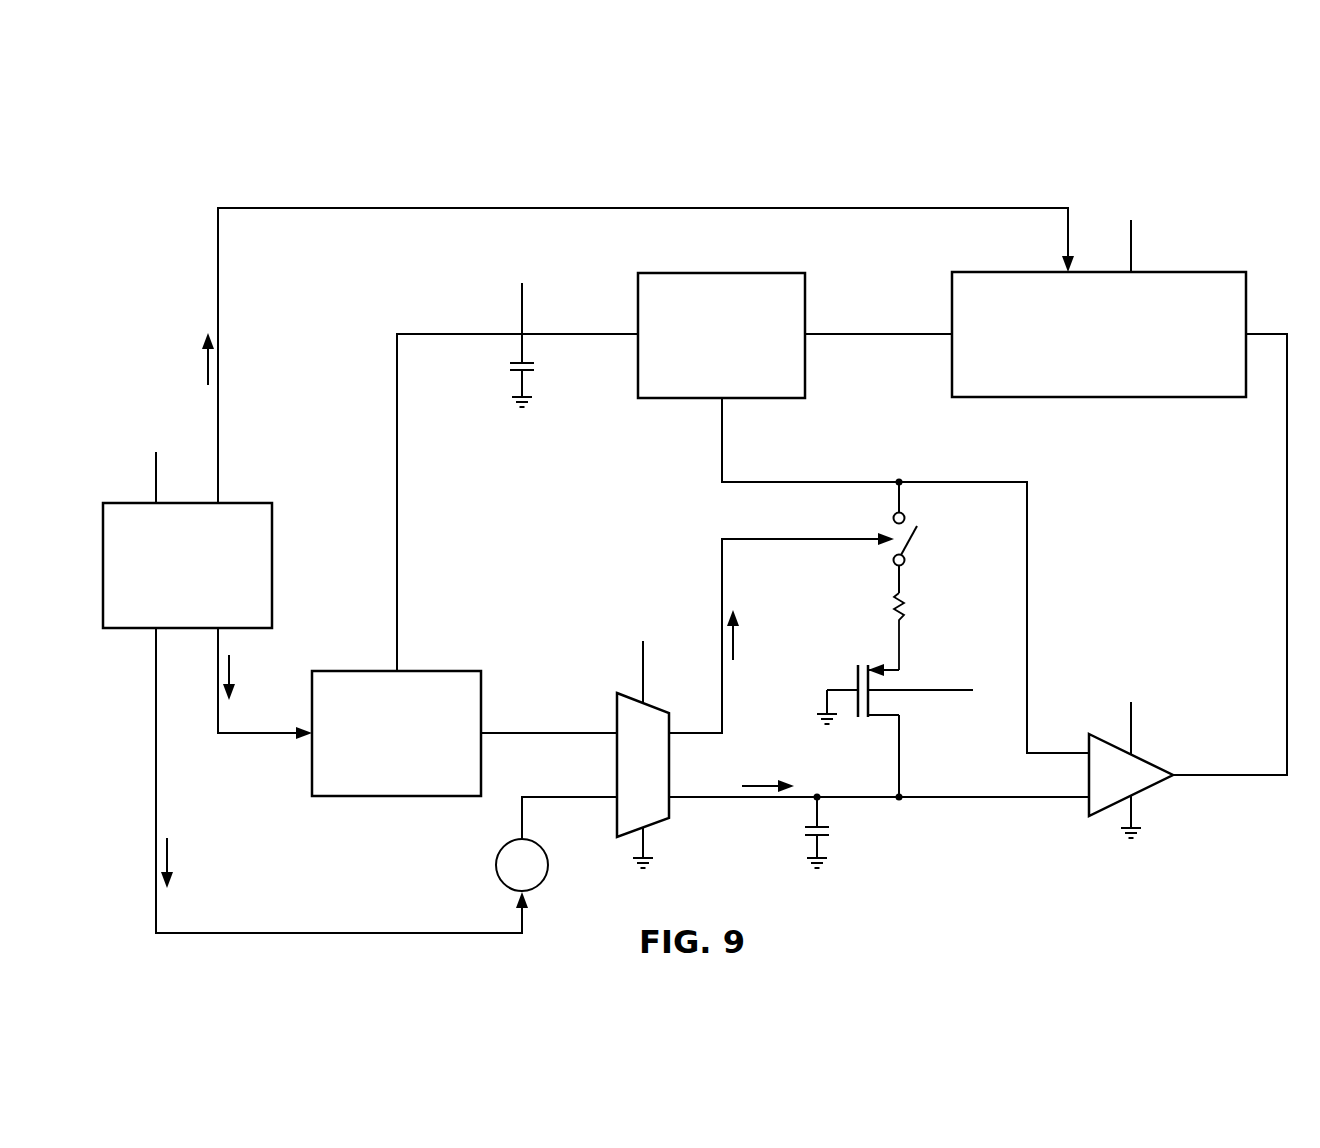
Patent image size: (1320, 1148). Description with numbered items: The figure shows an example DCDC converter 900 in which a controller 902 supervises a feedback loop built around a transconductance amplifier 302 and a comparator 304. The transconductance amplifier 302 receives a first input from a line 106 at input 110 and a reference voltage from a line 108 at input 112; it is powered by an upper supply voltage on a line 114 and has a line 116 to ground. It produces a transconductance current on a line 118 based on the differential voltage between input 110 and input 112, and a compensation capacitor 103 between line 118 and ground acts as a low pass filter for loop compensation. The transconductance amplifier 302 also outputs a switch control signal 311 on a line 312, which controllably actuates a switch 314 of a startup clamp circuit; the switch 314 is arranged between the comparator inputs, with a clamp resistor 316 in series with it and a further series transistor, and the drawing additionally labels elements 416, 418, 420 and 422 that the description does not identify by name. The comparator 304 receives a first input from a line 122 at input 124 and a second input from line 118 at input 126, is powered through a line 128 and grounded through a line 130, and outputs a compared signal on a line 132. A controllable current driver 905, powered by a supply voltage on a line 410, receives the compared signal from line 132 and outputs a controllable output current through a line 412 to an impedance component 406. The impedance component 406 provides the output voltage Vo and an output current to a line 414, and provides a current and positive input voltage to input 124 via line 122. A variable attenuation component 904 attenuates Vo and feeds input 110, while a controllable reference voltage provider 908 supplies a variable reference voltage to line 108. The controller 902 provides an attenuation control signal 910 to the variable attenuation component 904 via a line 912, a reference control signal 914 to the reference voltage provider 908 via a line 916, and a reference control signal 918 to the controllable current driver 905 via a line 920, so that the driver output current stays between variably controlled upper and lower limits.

The DCDC converter 900 is at (157, 172).
The controller 902 is at (102, 566).
The variable attenuation component 904 is at (382, 798).
The controllable current driver 905 is at (1248, 302).
The controllable reference voltage provider 908 is at (496, 862).
The attenuation control signal 910 is at (232, 676).
The line 912 is at (260, 736).
The reference control signal 914 is at (170, 858).
The line 916 is at (334, 931).
The reference control signal 918 is at (206, 358).
The line 920 is at (470, 207).
The impedance component 406 is at (736, 272).
The line 410 is at (1133, 252).
The line 412 is at (880, 333).
The line 414 is at (395, 502).
The capacitor 416 is at (512, 370).
The drain terminal of transistor 418 is at (900, 682).
The body terminal of transistor 420 is at (930, 692).
The transistor 422 is at (856, 672).
The line 122 is at (720, 441).
The line 312 is at (720, 570).
The switch 314 is at (912, 544).
The clamp resistor 316 is at (894, 606).
The switch control signal 311 is at (736, 636).
The transconductance amplifier 302 is at (662, 704).
The line 114 is at (641, 660).
The input 110 is at (612, 728).
The line 106 is at (531, 732).
The line 108 is at (549, 796).
The input 112 is at (612, 804).
The line 116 is at (648, 846).
The compensation capacitor 103 is at (805, 829).
The line 118 is at (879, 823).
The input 124 is at (1084, 750).
The input 126 is at (1084, 803).
The line 128 is at (1133, 736).
The line 130 is at (1134, 812).
The comparator 304 is at (1101, 820).
The line 132 is at (1234, 777).